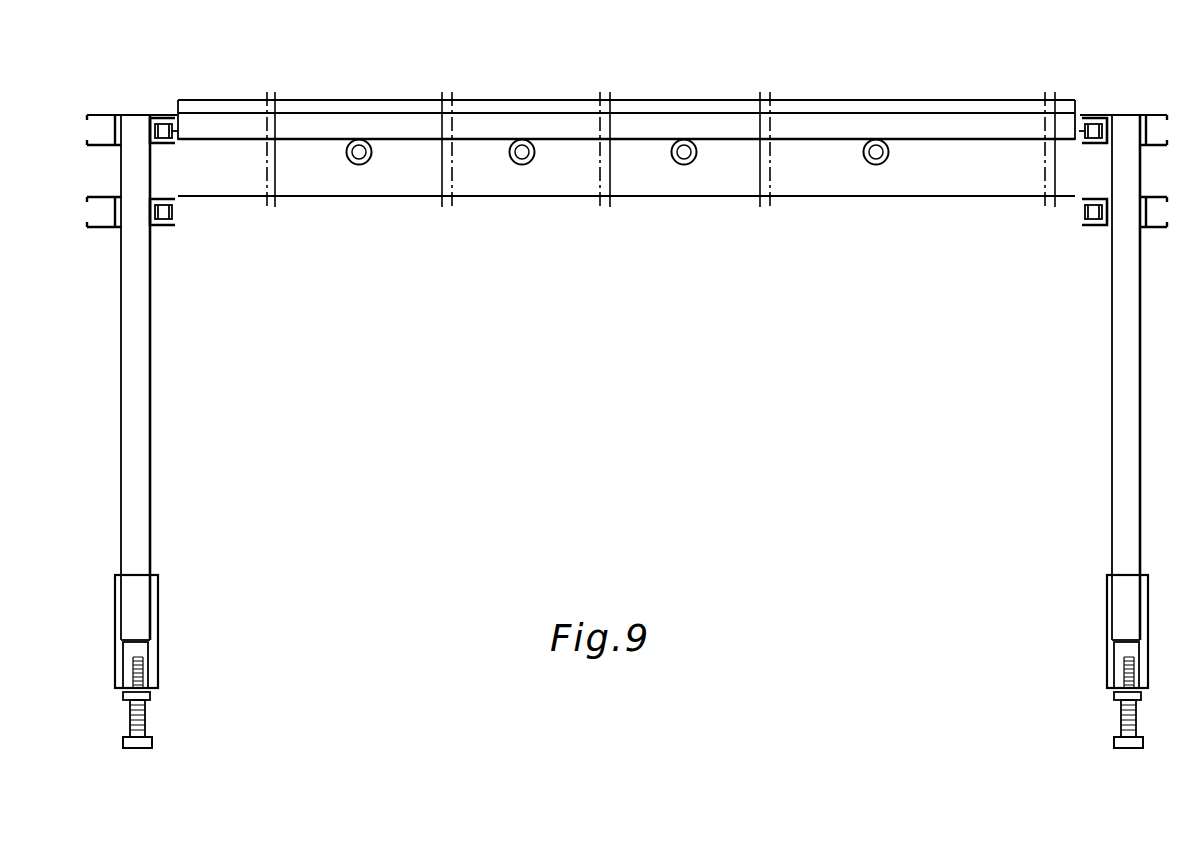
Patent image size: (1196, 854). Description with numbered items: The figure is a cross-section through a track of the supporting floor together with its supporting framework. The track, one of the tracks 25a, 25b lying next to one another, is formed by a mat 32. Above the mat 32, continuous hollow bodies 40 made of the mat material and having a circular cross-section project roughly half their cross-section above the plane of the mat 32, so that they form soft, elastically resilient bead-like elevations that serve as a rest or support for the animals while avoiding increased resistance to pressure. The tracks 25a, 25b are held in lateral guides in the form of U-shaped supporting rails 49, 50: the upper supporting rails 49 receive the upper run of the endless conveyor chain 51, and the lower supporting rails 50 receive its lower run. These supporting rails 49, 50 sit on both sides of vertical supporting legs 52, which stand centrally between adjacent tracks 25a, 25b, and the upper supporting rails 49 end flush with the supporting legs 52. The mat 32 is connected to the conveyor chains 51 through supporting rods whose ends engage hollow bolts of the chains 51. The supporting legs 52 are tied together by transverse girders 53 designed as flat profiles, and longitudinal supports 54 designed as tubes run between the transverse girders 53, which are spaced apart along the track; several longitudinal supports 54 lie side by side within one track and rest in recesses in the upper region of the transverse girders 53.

The hollow body 40 is at (467, 107).
The mat 32 is at (618, 128).
The track 25a is at (626, 88).
The track 25b is at (626, 117).
The upper supporting rail 49 is at (1090, 117).
The lower supporting rail 50 is at (1090, 233).
The endless conveyor chain 51 is at (167, 143).
The vertical supporting leg 52 is at (140, 485).
The transverse girder 53 is at (402, 178).
The longitudinal support 54 is at (688, 164).